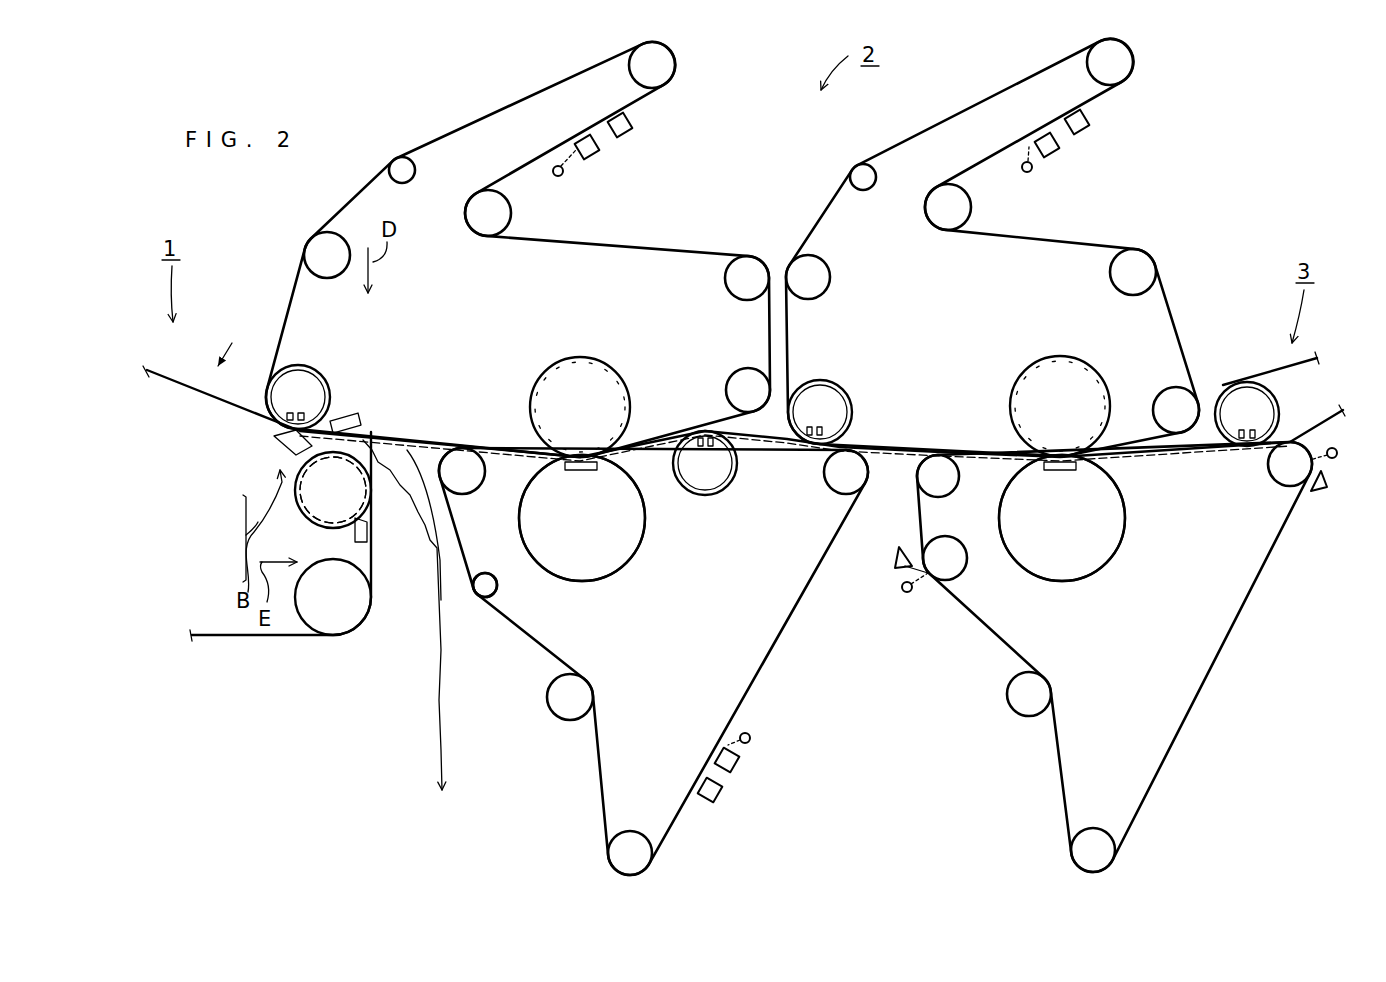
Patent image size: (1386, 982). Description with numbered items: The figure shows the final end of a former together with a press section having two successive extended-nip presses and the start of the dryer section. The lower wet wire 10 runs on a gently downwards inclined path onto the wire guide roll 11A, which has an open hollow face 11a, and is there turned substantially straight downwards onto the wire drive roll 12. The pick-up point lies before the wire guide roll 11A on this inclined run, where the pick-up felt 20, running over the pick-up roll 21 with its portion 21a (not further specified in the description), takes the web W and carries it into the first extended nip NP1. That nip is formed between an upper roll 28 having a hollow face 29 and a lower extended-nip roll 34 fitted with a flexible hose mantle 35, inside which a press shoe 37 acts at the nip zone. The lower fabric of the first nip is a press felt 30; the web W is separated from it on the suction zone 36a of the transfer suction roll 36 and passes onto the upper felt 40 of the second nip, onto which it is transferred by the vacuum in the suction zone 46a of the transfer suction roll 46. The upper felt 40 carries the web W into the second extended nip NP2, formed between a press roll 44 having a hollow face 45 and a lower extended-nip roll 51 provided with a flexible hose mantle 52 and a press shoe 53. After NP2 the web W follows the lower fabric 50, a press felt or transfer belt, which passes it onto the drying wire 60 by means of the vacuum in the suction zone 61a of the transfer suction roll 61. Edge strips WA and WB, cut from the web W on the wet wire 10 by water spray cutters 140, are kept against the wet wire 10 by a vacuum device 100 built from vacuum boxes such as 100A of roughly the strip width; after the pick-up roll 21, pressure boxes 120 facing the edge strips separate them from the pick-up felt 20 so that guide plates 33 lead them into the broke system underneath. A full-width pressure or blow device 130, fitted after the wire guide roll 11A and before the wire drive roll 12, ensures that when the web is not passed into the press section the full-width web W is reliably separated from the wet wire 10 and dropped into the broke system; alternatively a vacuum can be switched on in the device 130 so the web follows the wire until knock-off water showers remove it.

The wet wire 10 is at (164, 385).
The wire guide roll 11A is at (360, 482).
The open hollow face 11a is at (369, 511).
The wire drive roll 12 is at (357, 594).
The pick-up felt 20 is at (512, 105).
The pick-up roll 21 is at (303, 388).
The roller heater 21a is at (300, 414).
The upper roll 28 is at (553, 393).
The hollow face 29 is at (615, 368).
The press felt 30 is at (780, 640).
The guide plate 33 is at (447, 582).
The lower extended-nip roll 34 is at (604, 563).
The flexible hose mantle 35 is at (641, 559).
The transfer suction roll 36 is at (700, 492).
The suction zone 36a is at (708, 471).
The press shoe 37 is at (583, 470).
The upper felt 40 is at (829, 222).
The press roll 44 is at (1033, 385).
The hollow face 45 is at (1096, 371).
The transfer suction roll 46 is at (826, 396).
The suction zone 46a is at (818, 431).
The lower fabric 50 is at (988, 626).
The lower extended-nip roll 51 is at (1102, 524).
The flexible hose mantle 52 is at (1120, 500).
The press shoe 53 is at (1060, 470).
The drying wire 60 is at (1270, 372).
The transfer suction roll 61 is at (1263, 405).
The suction zone 61a is at (1250, 450).
The vacuum device 100 is at (266, 447).
The vacuum box 100A is at (220, 538).
The pressure box 120 is at (350, 420).
The pressure device 130 is at (352, 537).
The water spray cutter 140 is at (209, 393).
The first extended nip NP1 is at (577, 451).
The second extended nip NP2 is at (1060, 448).
The web W is at (897, 458).
The edge strip WA is at (445, 752).
The edge strip WB is at (446, 777).